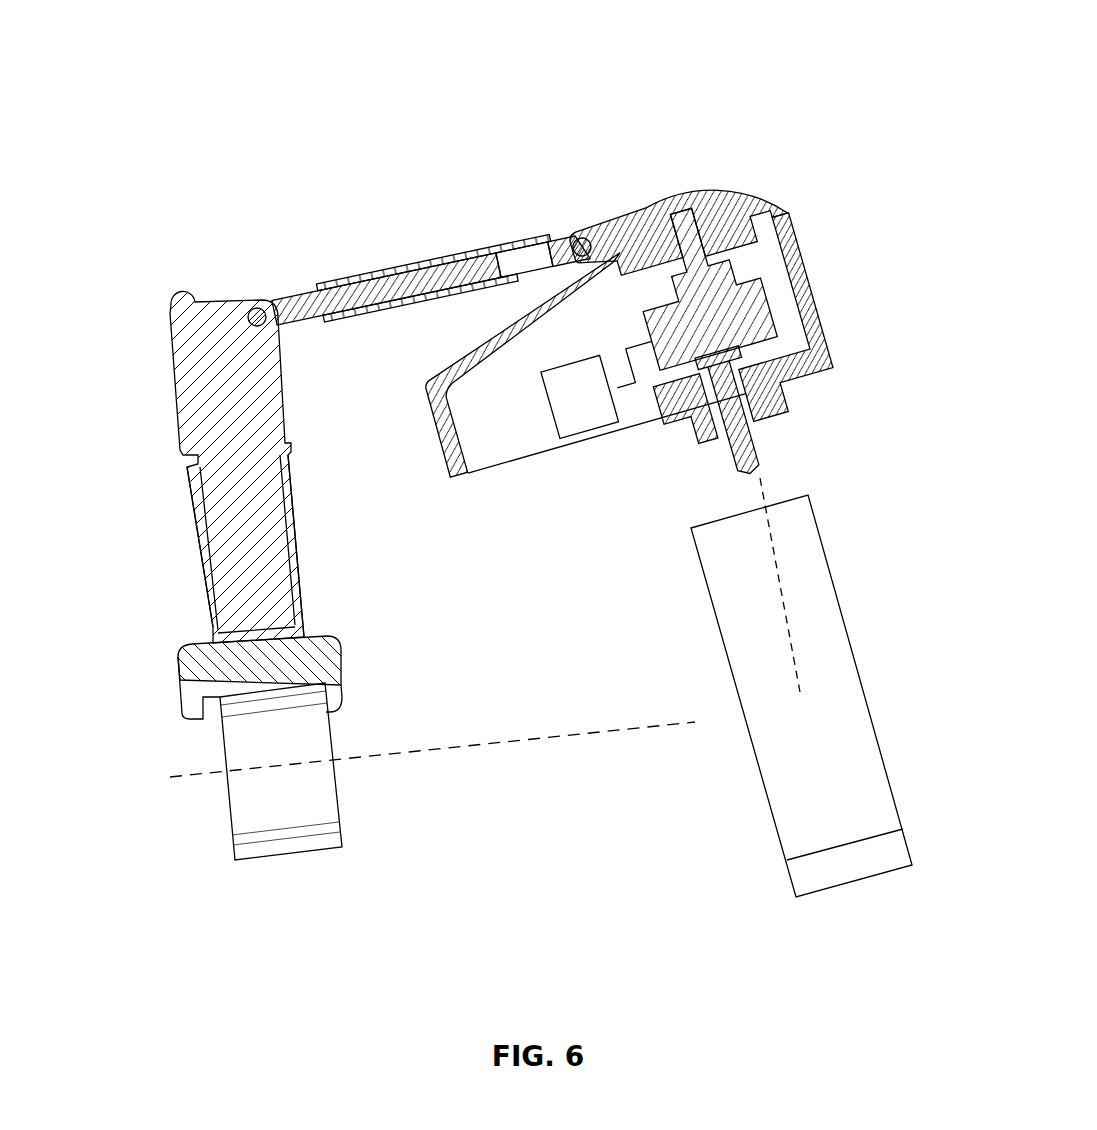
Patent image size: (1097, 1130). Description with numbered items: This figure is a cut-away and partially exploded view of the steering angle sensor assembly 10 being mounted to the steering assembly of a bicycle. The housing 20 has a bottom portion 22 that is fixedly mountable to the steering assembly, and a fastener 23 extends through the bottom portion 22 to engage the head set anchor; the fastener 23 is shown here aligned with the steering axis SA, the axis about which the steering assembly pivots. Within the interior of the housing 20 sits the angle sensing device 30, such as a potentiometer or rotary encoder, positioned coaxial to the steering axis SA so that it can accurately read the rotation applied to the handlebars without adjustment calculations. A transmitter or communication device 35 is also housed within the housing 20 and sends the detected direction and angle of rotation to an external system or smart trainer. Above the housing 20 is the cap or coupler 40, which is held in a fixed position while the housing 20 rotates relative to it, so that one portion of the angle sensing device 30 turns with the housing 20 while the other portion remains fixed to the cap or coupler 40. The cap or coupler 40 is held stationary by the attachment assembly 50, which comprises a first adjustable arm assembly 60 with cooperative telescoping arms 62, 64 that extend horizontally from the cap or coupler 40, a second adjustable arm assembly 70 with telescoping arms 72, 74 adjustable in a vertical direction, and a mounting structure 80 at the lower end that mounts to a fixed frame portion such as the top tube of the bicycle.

The steering angle sensor assembly 10 is at (481, 448).
The housing 20 is at (795, 243).
The bottom portion 22 is at (686, 410).
The fastener 23 is at (750, 442).
The angle sensing device 30 is at (780, 287).
The transmitter or communication device 35 is at (578, 415).
The cap or coupler 40 is at (645, 218).
The attachment assembly 50 is at (276, 240).
The first adjustable arm assembly 60 is at (431, 226).
The arm 62 is at (513, 250).
The arm 64 is at (313, 313).
The second adjustable arm assembly 70 is at (372, 479).
The arm 72 is at (272, 403).
The arm 74 is at (303, 563).
The mounting structure 80 is at (352, 735).
The steering axis SA is at (801, 687).